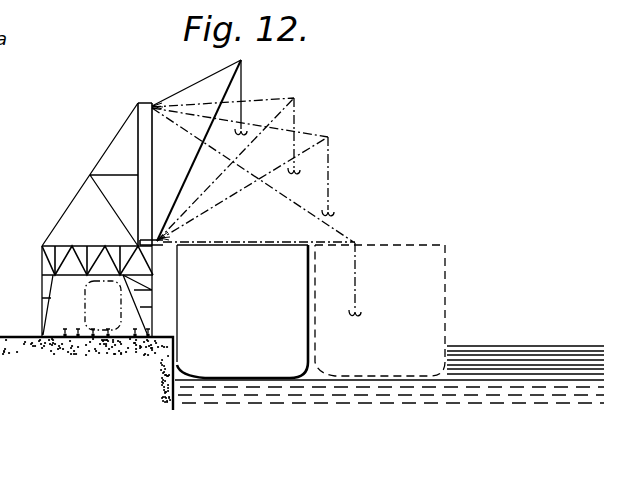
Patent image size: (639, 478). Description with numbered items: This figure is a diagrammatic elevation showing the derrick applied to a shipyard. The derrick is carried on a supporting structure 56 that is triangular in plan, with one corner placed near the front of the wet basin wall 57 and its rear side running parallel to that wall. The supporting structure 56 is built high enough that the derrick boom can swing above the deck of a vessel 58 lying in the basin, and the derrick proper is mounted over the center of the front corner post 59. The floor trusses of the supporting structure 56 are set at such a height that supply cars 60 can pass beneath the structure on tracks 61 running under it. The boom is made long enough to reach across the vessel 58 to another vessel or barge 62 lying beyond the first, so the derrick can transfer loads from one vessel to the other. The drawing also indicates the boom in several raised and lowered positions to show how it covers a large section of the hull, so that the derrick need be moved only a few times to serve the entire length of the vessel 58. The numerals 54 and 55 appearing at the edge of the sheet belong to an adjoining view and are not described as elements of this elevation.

The reference from adjacent figure 54 is at (0, 72).
The reference from adjacent figure 55 is at (2, 94).
The crane gantry truss 56 is at (93, 246).
The quay wall 57 is at (166, 369).
The ship 58 is at (181, 313).
The gantry leg 59 is at (151, 307).
The passage opening through gantry 60 is at (86, 306).
The travelling wheels 61 is at (80, 333).
The ship in second position 62 is at (447, 276).